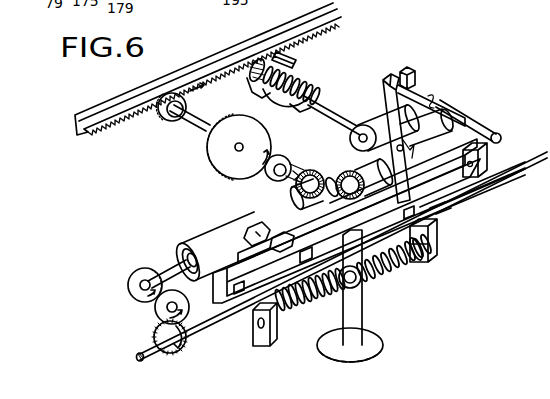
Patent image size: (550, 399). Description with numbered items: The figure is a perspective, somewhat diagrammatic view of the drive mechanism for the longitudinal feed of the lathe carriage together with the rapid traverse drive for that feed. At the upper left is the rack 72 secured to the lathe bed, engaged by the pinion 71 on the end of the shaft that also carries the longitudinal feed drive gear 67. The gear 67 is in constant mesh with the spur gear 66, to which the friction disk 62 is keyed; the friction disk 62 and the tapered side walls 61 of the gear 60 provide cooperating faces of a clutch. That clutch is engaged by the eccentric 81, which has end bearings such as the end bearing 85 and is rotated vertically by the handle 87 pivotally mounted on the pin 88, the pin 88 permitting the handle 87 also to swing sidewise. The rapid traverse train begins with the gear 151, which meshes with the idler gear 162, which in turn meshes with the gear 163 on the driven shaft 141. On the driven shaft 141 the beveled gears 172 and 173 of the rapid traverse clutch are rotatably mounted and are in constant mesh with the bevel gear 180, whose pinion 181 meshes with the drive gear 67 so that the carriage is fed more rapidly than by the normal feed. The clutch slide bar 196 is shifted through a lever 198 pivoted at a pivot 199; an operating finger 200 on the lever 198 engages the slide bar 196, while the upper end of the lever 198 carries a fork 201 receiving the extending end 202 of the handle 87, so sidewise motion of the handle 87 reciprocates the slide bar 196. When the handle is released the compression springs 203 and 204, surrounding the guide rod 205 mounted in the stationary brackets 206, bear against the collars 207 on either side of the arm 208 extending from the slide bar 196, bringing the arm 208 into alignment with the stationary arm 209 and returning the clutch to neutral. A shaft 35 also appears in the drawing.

The rack 72 is at (95, 97).
The pinion 71 is at (172, 116).
The gear 67 is at (238, 100).
The spur gear 66 is at (250, 78).
The friction disk 62 is at (285, 62).
The tapered side walls 61 is at (310, 63).
The gear 60 is at (306, 66).
The end bearing 85 is at (362, 136).
The eccentric 81 is at (374, 118).
The extending end 202 is at (400, 78).
The pin 88 is at (432, 100).
The fork 201 is at (440, 112).
The handle 87 is at (501, 136).
The clutch slide bar 196 is at (480, 163).
The pinion 181 is at (290, 150).
The bevel gear 180 is at (322, 170).
The beveled gear 173 is at (346, 177).
The beveled gear 172 is at (291, 200).
The arm 208 is at (294, 237).
The driven shaft 141 is at (171, 271).
The gear 163 is at (141, 271).
The idler gear 162 is at (161, 310).
The gear 151 is at (183, 356).
The shaft 35 is at (219, 317).
The compression spring 203 is at (300, 312).
The collar 207 is at (360, 281).
The compression spring 204 is at (406, 262).
The guide rod 205 is at (418, 260).
The stationary bracket 206 is at (440, 258).
The stationary arm 209 is at (355, 337).
The operating finger 200 is at (437, 212).
The lever 198 is at (440, 205).
The pivot 199 is at (447, 190).